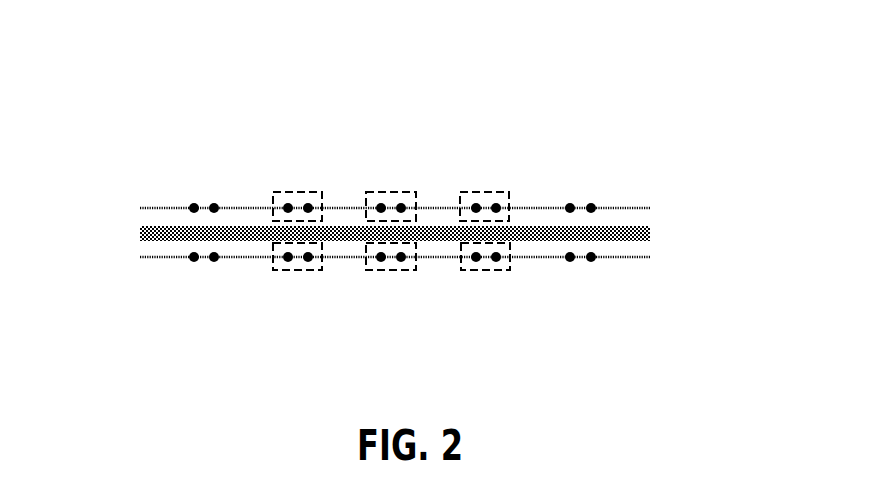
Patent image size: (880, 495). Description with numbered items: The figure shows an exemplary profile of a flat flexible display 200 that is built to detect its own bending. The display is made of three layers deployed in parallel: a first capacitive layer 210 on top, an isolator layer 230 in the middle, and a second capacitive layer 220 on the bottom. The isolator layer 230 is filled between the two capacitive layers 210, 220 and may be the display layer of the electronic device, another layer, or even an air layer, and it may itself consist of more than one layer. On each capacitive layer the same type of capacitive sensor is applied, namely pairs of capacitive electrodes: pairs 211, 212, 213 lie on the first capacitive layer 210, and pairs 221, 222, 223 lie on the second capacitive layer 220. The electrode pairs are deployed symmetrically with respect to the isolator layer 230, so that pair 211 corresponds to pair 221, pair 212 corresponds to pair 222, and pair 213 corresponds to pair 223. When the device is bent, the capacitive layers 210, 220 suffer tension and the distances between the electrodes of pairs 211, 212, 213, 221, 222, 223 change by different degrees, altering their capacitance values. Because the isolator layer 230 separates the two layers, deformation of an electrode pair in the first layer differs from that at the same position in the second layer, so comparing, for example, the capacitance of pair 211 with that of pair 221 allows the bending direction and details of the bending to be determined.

The heating element / heater assembly 200 is at (436, 198).
The first capacitive layer 210 is at (137, 208).
The capacitive electrodes pair 211 is at (313, 192).
The capacitive electrodes pair 212 is at (407, 192).
The capacitive electrodes pair 213 is at (502, 192).
The second capacitive layer 220 is at (137, 257).
The capacitive electrodes pair 221 is at (312, 270).
The capacitive electrodes pair 222 is at (403, 270).
The capacitive electrodes pair 223 is at (500, 270).
The isolator layer 230 is at (651, 231).